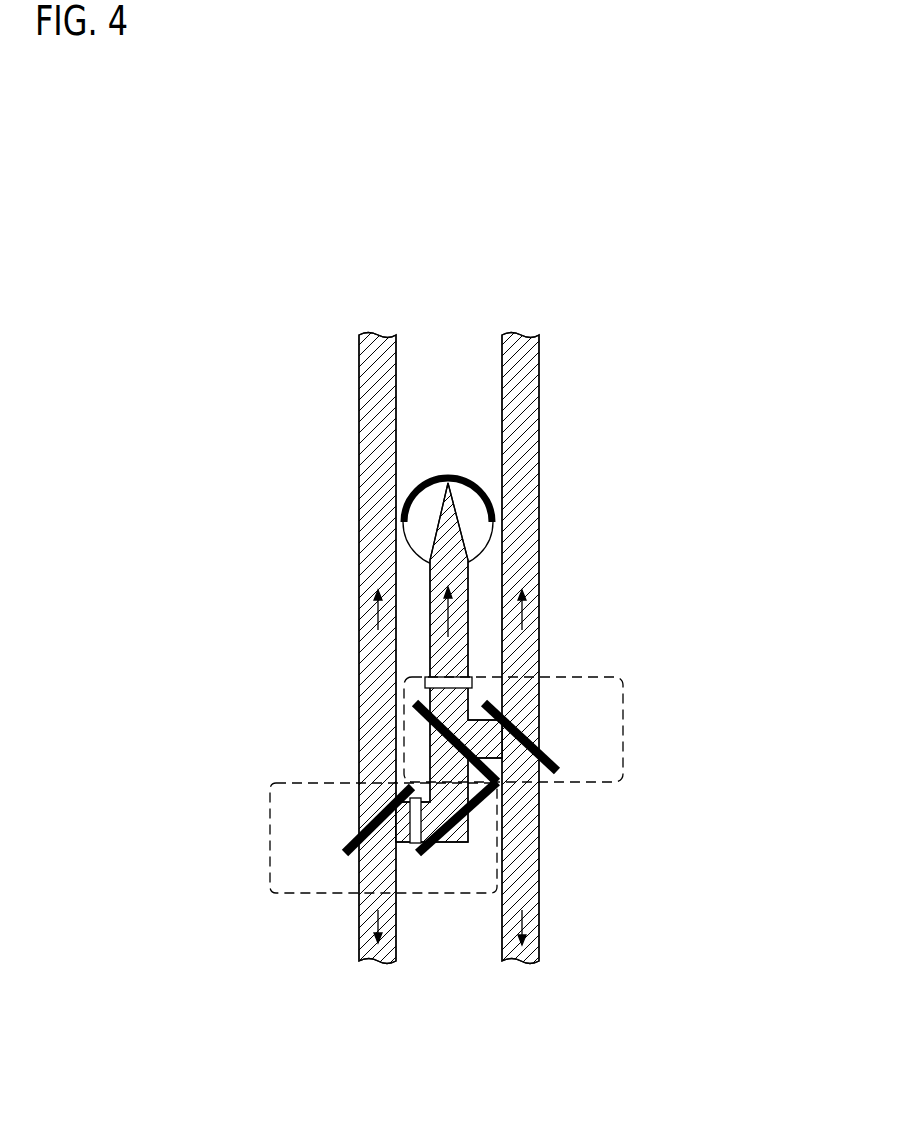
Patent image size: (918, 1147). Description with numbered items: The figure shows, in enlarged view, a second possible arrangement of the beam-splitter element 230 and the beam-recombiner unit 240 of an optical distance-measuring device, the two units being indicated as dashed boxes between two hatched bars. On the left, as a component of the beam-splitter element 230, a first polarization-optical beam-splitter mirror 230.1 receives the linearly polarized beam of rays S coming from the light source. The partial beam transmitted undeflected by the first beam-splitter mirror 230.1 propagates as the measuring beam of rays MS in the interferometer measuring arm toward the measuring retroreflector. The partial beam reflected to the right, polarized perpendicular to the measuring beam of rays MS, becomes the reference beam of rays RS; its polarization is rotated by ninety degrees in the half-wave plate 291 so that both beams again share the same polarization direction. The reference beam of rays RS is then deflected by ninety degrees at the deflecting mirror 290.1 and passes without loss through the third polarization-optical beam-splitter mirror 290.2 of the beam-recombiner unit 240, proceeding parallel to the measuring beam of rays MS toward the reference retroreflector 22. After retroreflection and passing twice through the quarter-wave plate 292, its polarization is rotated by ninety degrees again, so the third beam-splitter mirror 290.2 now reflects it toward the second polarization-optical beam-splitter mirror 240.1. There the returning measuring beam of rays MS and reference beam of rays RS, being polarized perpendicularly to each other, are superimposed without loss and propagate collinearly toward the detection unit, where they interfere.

The measuring beam of rays MS is at (378, 438).
The reference retroreflector 22 is at (490, 503).
The reference beam of rays RS is at (458, 578).
The lambda/4 plate 292 is at (443, 682).
The lambda/2 plate 291 is at (412, 826).
The beam-recombiner unit 240 is at (623, 710).
The second polarization-optical beam-splitter mirror 240.1 is at (470, 743).
The third polarization-optical beam-splitter mirror 290.2 is at (478, 764).
The deflecting mirror 290.1 is at (430, 842).
The beam-splitter element 230 is at (270, 805).
The first polarization-optical beam-splitter mirror 230.1 is at (345, 853).
The beam of rays S is at (360, 952).